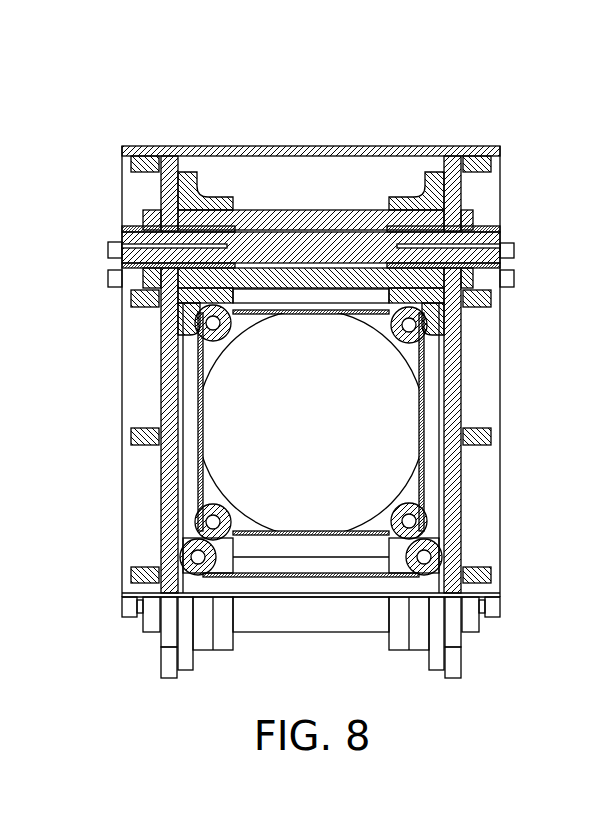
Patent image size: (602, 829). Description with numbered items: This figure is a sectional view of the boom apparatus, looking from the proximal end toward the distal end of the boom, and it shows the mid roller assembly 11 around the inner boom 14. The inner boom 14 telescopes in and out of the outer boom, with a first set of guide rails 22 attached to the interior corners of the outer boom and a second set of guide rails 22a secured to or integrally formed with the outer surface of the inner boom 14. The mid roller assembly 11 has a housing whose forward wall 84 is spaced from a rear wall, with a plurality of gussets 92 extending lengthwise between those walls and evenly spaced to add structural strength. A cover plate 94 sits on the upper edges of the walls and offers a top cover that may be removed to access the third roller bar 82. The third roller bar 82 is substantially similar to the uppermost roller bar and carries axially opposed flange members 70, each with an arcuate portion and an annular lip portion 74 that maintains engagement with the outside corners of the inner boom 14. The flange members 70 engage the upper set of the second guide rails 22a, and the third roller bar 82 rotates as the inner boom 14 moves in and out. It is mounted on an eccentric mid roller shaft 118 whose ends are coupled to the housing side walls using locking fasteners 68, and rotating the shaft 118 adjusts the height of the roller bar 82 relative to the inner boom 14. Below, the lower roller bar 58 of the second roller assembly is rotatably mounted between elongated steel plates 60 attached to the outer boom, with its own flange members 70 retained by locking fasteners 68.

The mid roller assembly 11 is at (347, 97).
The inner boom 14 is at (200, 372).
The first set of guide rails 22 is at (185, 550).
The second set of guide rails 22a is at (200, 334).
The roller bar 58 is at (312, 625).
The elongated steel plates 60 is at (165, 660).
The locking fasteners 68 is at (125, 604).
The flange members 70 is at (206, 196).
The annular lip portion 74 is at (207, 194).
The third roller bar 82 is at (290, 215).
The forward wall 84 is at (487, 193).
The gussets 92 is at (130, 298).
The cover plate 94 is at (413, 146).
The eccentric mid roller shaft 118 is at (341, 243).